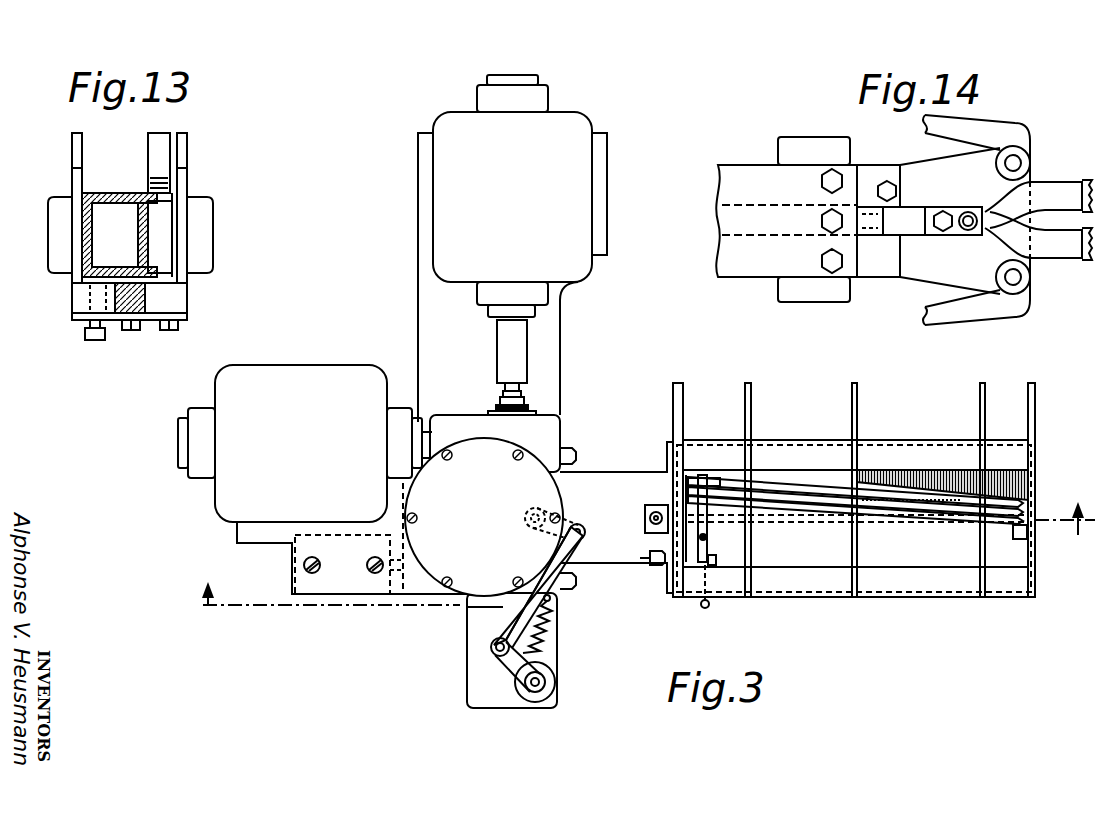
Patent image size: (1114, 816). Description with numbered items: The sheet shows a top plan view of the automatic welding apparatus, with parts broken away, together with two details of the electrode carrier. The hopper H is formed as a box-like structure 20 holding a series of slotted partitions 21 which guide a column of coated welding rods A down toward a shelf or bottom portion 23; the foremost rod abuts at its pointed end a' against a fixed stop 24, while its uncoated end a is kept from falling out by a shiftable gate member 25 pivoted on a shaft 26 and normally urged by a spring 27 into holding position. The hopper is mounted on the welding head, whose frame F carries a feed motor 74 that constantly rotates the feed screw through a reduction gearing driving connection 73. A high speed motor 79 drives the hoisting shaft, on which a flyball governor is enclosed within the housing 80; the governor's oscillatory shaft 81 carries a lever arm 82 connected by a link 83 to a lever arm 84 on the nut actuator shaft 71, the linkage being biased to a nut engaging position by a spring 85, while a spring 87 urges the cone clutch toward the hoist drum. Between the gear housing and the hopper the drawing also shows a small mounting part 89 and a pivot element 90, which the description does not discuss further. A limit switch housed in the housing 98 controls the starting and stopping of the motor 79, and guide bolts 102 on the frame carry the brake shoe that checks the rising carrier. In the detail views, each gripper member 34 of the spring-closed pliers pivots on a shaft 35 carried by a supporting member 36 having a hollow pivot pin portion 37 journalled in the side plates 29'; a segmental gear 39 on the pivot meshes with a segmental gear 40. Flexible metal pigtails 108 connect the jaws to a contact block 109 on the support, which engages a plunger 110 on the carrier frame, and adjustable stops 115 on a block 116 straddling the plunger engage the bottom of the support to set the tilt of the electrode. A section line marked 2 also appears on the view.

In FIG. 3, the box-like structure 20 is at (905, 567).
In FIG. 3, the slotted partitions 21 is at (850, 546).
In FIG. 3, the shelf or bottom portion 23 is at (925, 472).
In FIG. 3, the fixed stop 24 is at (1020, 538).
In FIG. 3, the shiftable gate member 25 is at (713, 528).
In FIG. 3, the shaft 26 is at (717, 560).
In FIG. 3, the spring 27 is at (700, 606).
In FIG. 13, the side plates 29' is at (139, 208).
In FIG. 14, the gripper member 34 is at (1085, 200).
In FIG. 14, the shaft 35 is at (1013, 163).
In FIG. 13, the supporting member 36 is at (84, 250).
In FIG. 14, the supporting member 36 is at (960, 245).
In FIG. 13, the hollow pivot pin portion 37 is at (115, 235).
In FIG. 13, the segmental gear 39 is at (162, 235).
In FIG. 13, the segmental gear 40 is at (148, 167).
In FIG. 3, the nut actuator shaft 71 is at (528, 514).
In FIG. 3, the reduction gearing driving connection 73 is at (562, 424).
In FIG. 3, the feed motor 74 is at (312, 378).
In FIG. 3, the high speed motor 79 is at (445, 240).
In FIG. 3, the housing 80 is at (466, 682).
In FIG. 3, the oscillatory shaft 81 is at (553, 684).
In FIG. 3, the lever arm 82 is at (513, 655).
In FIG. 3, the link 83 is at (535, 582).
In FIG. 3, the lever arm 84 is at (571, 530).
In FIG. 3, the spring 85 is at (545, 622).
In FIG. 3, the spring 87 is at (522, 408).
In FIG. 3, the bracket plate 89 is at (658, 503).
In FIG. 3, the pivot 90 is at (650, 520).
In FIG. 3, the housing 98 is at (302, 585).
In FIG. 3, the guide bolts 102 is at (504, 389).
In FIG. 14, the flexible metal pigtails 108 is at (1048, 192).
In FIG. 13, the contact block 109 is at (130, 329).
In FIG. 14, the contact block 109 is at (905, 212).
In FIG. 13, the plunger 110 is at (145, 303).
In FIG. 14, the plunger 110 is at (880, 221).
In FIG. 13, the adjustable stops 115 is at (85, 337).
In FIG. 14, the adjustable stops 115 is at (887, 182).
In FIG. 13, the block 116 is at (150, 283).
In FIG. 14, the block 116 is at (809, 219).
In FIG. 3, the frame F is at (425, 598).
In FIG. 3, the coated welding rods A is at (795, 490).
In FIG. 3, the hopper H is at (873, 452).
In FIG. 3, the uncoated end a is at (703, 449).
In FIG. 3, the pointed end a' is at (1045, 493).
In FIG. 3, the section line 2- 2 is at (640, 564).